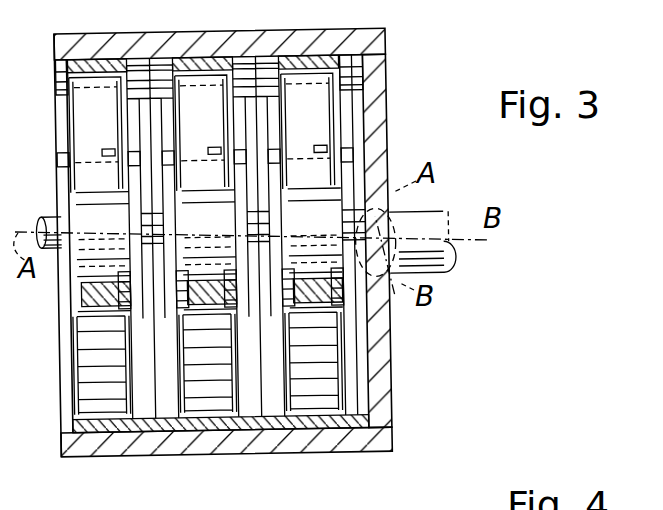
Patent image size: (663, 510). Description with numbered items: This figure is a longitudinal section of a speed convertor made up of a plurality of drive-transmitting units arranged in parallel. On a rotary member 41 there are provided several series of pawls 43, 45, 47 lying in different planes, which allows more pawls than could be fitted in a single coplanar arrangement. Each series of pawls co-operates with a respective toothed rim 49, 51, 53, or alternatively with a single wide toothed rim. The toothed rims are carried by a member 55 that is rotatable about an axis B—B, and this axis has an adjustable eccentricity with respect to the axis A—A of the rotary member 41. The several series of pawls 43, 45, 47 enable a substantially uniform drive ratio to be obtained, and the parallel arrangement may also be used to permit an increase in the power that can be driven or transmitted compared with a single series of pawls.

The rotary member 41 is at (46, 218).
The series of pawls 43 is at (80, 345).
The series of pawls 45 is at (181, 128).
The series of pawls 47 is at (286, 128).
The toothed rim 49 is at (57, 93).
The toothed rim 51 is at (226, 432).
The toothed rim 53 is at (350, 95).
The member 55 is at (390, 378).